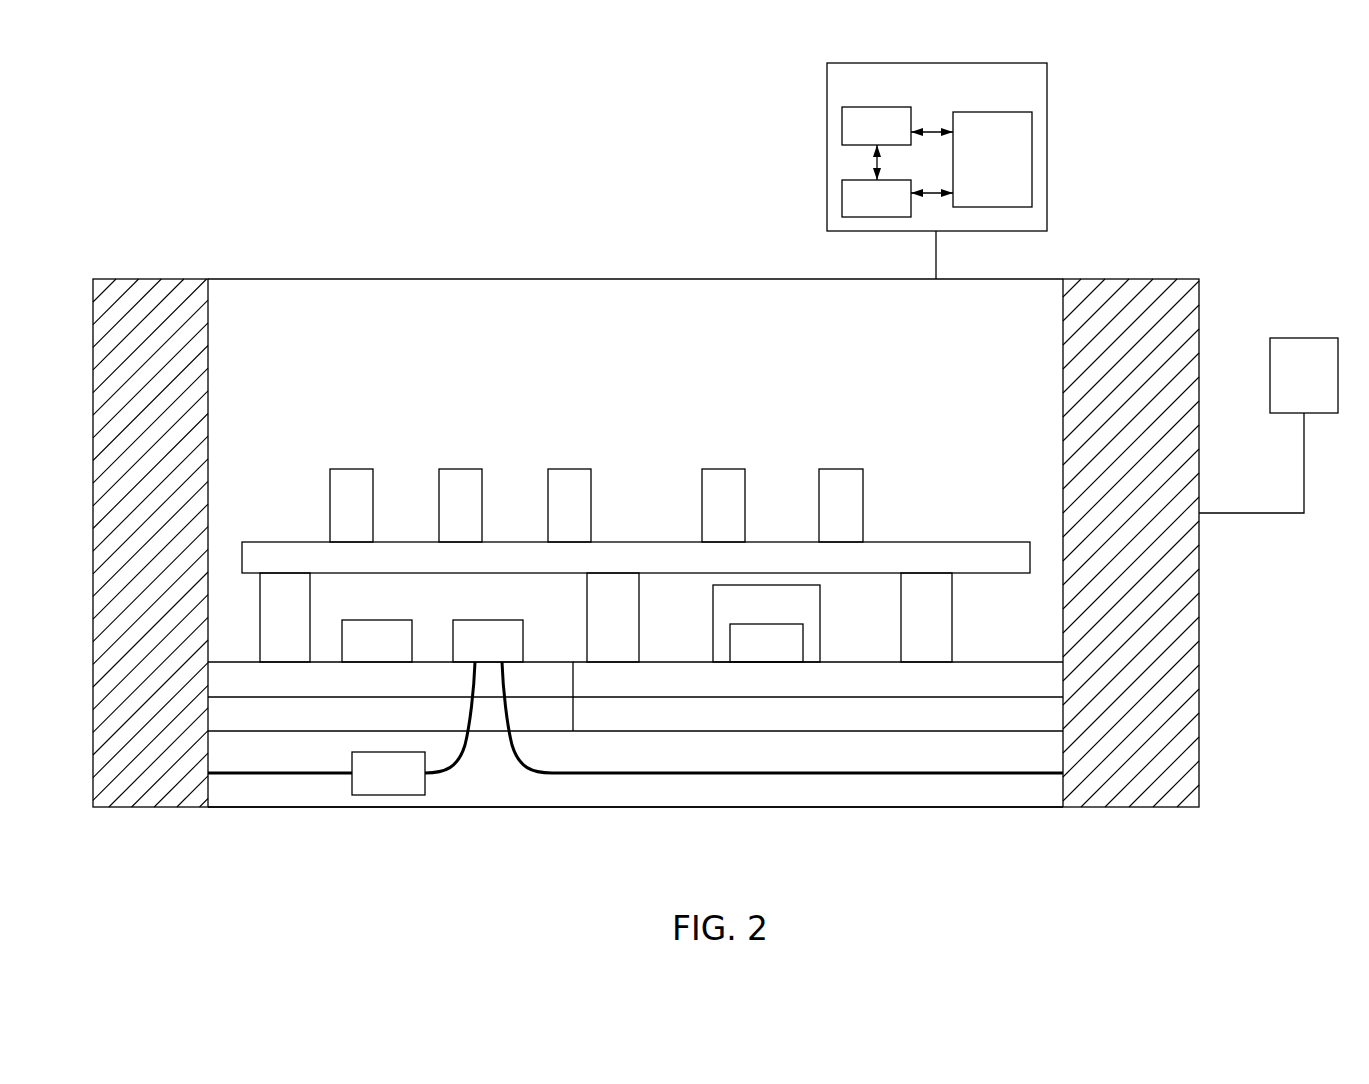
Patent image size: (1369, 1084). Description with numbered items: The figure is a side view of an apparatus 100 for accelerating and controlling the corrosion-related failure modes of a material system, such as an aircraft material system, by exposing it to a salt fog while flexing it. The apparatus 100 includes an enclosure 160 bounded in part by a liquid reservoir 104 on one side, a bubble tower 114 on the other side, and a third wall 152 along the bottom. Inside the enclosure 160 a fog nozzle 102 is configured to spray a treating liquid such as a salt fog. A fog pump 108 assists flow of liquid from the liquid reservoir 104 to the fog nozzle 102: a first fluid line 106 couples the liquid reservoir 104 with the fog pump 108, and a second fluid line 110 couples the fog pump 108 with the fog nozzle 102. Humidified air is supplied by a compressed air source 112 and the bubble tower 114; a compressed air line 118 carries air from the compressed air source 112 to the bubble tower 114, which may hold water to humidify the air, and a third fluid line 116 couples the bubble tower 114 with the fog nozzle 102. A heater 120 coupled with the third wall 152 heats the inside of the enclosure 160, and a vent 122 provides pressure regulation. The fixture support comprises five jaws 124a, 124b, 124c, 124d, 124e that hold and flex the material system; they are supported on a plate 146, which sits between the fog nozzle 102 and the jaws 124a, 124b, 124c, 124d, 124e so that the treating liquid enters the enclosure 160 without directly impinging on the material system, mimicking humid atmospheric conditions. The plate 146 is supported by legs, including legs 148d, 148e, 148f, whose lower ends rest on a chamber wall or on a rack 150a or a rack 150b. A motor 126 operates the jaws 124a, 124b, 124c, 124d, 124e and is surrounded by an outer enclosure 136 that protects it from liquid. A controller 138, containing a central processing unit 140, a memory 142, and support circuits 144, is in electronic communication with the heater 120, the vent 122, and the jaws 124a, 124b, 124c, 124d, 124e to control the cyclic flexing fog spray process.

The apparatus 100 is at (183, 202).
The fog nozzle 102 is at (469, 655).
The liquid reservoir 104 is at (124, 381).
The first fluid line 106 is at (285, 785).
The fog pump 108 is at (369, 788).
The second fluid line 110 is at (458, 785).
The compressed air source 112 is at (1285, 387).
The bubble tower 114 is at (1118, 401).
The third fluid line 116 is at (710, 785).
The compressed air line 118 is at (1267, 514).
The heater 120 is at (269, 727).
The vent 122 is at (358, 655).
The jaw 124a is at (334, 462).
The jaw 124b is at (443, 462).
The jaw 124c is at (551, 462).
The jaw 124d is at (706, 462).
The jaw 124e is at (825, 462).
The motor 126 is at (747, 655).
The outer enclosure 136 is at (747, 618).
The controller 138 is at (923, 98).
The central processing unit 140 is at (857, 141).
The memory 142 is at (857, 212).
The support circuits 144 is at (973, 167).
The plate 146 is at (488, 571).
The leg 148d is at (248, 604).
The leg 148e is at (583, 626).
The leg 148f is at (957, 643).
The rack 150a is at (298, 693).
The rack 150b is at (653, 693).
The third wall 152 is at (928, 808).
The enclosure 160 is at (581, 335).